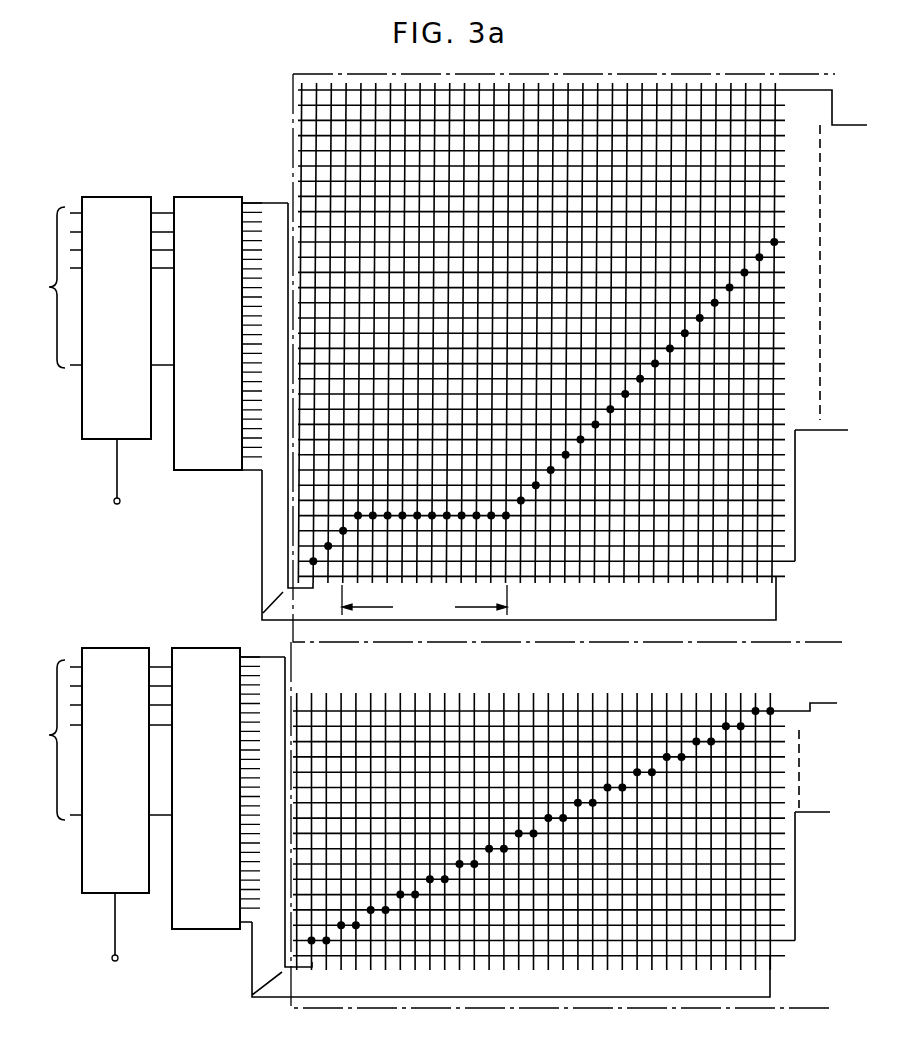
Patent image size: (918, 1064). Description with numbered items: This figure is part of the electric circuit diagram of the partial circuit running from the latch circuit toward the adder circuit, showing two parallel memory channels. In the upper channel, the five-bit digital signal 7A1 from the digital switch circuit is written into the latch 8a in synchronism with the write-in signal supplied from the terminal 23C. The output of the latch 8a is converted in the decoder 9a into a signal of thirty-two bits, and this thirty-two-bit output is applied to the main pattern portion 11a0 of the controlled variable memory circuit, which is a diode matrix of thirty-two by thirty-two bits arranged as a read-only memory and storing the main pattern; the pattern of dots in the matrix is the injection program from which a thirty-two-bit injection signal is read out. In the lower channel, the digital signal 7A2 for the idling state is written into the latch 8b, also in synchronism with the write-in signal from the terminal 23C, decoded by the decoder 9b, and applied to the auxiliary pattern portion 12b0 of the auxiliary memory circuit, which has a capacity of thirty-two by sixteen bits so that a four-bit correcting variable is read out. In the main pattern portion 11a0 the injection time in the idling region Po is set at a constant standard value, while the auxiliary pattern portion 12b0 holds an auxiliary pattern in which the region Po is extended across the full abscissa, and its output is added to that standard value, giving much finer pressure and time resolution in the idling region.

The latch 8a is at (117, 197).
The decoder 9a is at (205, 197).
The digital signal of 5 bits 7A1 is at (41, 287).
The terminal 23C is at (117, 715).
The main pattern portion 11a0 is at (706, 83).
The latch 8b is at (115, 648).
The decoder 9b is at (204, 648).
The digital signal 7A2 is at (41, 740).
The auxiliary pattern portion 12b0 is at (667, 682).
The low load region Po is at (424, 601).